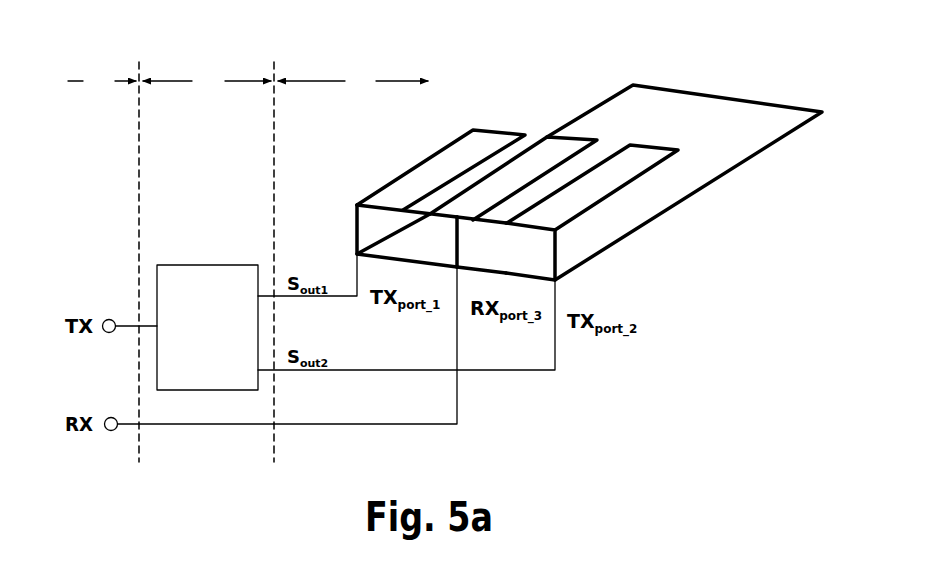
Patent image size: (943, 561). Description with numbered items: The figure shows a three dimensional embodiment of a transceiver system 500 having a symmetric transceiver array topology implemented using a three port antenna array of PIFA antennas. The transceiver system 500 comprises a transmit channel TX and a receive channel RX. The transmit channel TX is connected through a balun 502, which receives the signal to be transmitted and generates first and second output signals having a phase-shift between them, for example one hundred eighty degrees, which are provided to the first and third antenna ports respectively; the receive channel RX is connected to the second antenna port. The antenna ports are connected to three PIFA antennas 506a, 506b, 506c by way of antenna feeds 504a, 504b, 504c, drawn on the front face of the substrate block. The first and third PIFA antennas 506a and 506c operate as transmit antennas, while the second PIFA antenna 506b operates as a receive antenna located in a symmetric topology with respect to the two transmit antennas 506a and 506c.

The transceiver system 500 is at (113, 29).
The balun 502 is at (226, 349).
The antenna feed 504a is at (352, 237).
The antenna feed 504b is at (552, 258).
The antenna feed 504c is at (454, 248).
The first PIFA antenna 506a is at (492, 126).
The second PIFA antenna 506b is at (681, 145).
The third PIFA antenna 506c is at (590, 135).